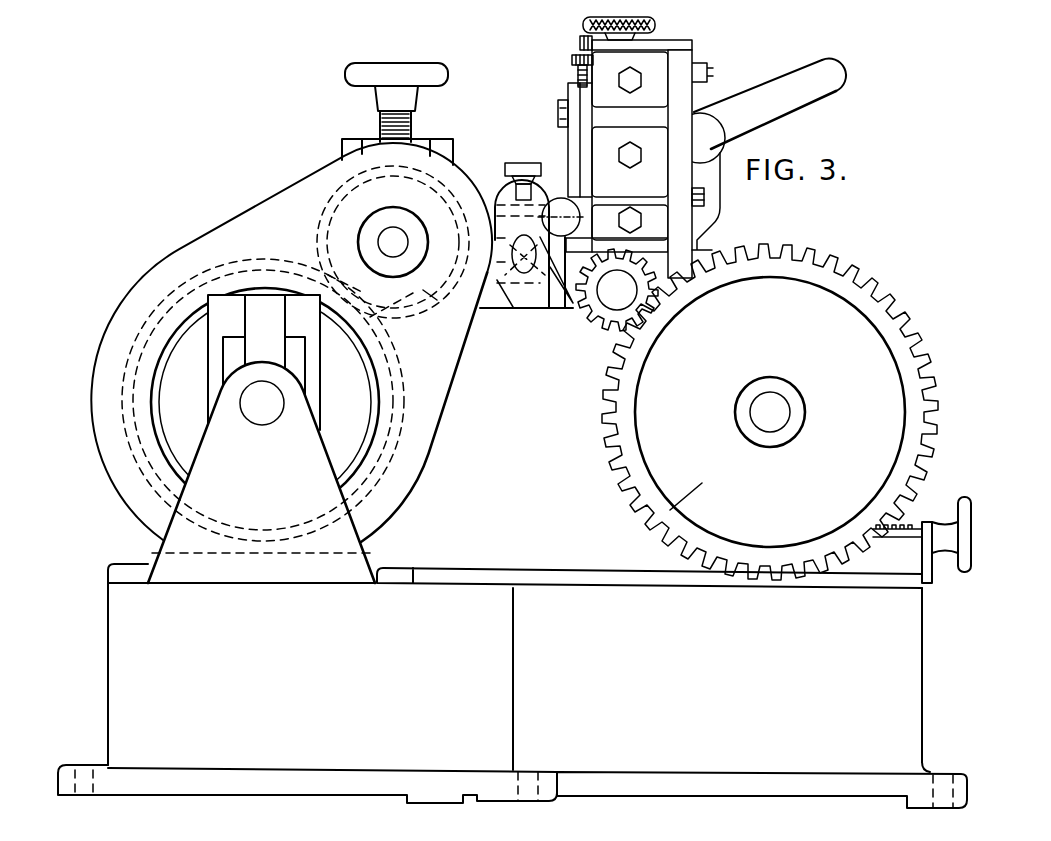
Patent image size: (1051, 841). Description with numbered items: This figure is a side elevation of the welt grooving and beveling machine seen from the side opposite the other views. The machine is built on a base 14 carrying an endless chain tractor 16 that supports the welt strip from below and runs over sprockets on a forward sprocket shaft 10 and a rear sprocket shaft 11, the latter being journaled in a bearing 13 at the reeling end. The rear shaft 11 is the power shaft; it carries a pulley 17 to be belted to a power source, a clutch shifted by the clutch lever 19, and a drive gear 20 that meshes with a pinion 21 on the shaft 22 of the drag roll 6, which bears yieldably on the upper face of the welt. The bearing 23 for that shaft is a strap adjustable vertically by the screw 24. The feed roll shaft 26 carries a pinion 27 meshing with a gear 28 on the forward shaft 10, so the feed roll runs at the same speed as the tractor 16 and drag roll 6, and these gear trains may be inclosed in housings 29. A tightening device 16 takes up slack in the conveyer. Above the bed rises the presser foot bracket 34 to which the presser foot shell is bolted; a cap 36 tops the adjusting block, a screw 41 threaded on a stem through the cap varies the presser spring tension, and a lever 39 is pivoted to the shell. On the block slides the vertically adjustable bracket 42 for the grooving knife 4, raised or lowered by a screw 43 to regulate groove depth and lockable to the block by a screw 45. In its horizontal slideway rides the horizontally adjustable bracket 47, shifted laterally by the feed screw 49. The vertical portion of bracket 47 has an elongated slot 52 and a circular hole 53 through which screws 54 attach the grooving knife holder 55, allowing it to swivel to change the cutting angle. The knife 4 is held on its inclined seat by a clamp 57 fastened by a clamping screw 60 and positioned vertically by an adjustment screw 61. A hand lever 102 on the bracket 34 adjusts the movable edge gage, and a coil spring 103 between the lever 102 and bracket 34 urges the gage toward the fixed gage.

The adjustable grooving knife 4 is at (555, 308).
The drag roll 6 is at (423, 292).
The forward sprocket shaft 10 is at (773, 410).
The rear sprocket shaft 11 is at (262, 403).
The bearing 13 is at (261, 472).
The base 14 is at (512, 686).
The tractor 16 is at (973, 530).
The pulley 17 is at (150, 440).
The clutch lever 19 is at (264, 362).
The drive gear 20 is at (398, 373).
The pinion 21 is at (408, 318).
The drag roll shaft 22 is at (390, 242).
The bearing 23 is at (437, 139).
The screw 24 is at (352, 65).
The feed roll shaft 26 is at (614, 300).
The pinion 27 is at (615, 327).
The gear 28 is at (925, 356).
The housing 29 is at (175, 275).
The presser foot bracket 34 is at (694, 98).
The cap 36 is at (693, 42).
The lever 39 is at (832, 76).
The screw 41 is at (585, 25).
The vertically adjustable bracket 42 is at (567, 90).
The screw 43 is at (574, 60).
The screw 45 is at (560, 112).
The horizontally adjustable bracket 47 is at (566, 195).
The feed screw 49 is at (582, 218).
The elongated horizontal slot 52 is at (500, 216).
The circular hole 53 is at (505, 238).
The screw 54 is at (497, 205).
The grooving knife holder 55 is at (497, 195).
The clamp 57 is at (522, 273).
The clamping screw 60 is at (505, 262).
The adjustment screw 61 is at (523, 165).
The hand lever 102 is at (700, 245).
The coil spring 103 is at (705, 200).